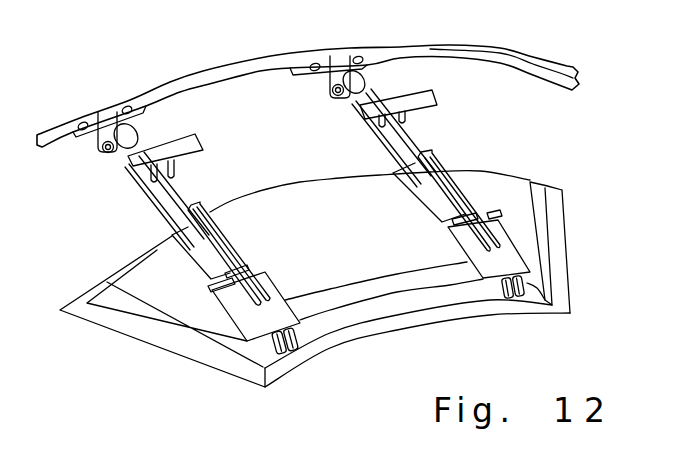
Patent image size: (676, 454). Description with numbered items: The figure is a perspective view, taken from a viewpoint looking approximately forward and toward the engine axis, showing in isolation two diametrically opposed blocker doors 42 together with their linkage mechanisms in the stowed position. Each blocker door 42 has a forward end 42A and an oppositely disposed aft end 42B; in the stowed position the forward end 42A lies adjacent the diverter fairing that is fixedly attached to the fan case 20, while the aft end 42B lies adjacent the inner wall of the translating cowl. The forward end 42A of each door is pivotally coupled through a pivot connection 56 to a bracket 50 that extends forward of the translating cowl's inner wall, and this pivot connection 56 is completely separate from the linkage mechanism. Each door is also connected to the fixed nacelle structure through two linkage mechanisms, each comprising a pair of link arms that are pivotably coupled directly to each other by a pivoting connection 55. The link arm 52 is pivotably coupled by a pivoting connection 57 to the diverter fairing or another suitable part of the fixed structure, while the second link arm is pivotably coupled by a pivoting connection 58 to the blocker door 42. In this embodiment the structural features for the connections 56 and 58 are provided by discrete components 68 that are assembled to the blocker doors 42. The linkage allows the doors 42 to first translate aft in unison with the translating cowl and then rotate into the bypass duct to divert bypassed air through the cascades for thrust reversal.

The fan case 20 is at (160, 86).
The blocker door 42 is at (499, 192).
The forward end of the blocker door 42A is at (294, 184).
The aft end of the blocker door 42B is at (380, 328).
The bracket 50 is at (177, 147).
The link arm 52 is at (153, 199).
The pivoting connection 55 is at (295, 352).
The pivot connection 56 is at (176, 167).
The pivoting connection 57 is at (105, 150).
The pivoting connection 58 is at (200, 291).
The discrete components 68 is at (192, 260).